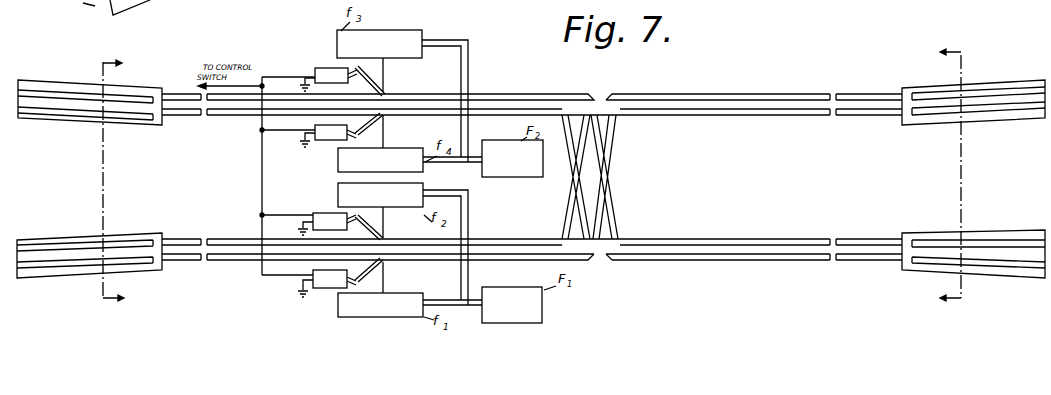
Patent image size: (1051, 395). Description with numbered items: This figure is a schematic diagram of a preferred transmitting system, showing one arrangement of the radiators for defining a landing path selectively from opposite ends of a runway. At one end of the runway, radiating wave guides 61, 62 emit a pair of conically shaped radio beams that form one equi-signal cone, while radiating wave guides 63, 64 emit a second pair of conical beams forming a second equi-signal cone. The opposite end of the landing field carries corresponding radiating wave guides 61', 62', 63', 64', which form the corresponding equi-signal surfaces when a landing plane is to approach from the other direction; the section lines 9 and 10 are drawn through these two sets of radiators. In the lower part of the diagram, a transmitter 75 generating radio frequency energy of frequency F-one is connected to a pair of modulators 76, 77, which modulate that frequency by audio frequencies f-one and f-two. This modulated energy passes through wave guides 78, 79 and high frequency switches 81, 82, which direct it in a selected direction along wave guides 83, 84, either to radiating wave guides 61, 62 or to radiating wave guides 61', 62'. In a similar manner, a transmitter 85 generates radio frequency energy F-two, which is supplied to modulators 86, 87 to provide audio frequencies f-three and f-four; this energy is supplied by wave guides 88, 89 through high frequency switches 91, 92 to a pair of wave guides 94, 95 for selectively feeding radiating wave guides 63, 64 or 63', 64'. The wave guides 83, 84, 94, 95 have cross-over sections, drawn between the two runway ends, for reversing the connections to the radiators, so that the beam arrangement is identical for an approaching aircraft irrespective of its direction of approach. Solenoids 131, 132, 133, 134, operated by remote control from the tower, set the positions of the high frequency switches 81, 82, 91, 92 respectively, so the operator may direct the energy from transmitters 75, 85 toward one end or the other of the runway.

The radiating wave guide 63' is at (85, 73).
The radiating wave guide 64' is at (85, 129).
The radiating wave guide 62' is at (85, 227).
The radiating wave guide 61' is at (85, 280).
The radiating wave guide 61 is at (978, 75).
The radiating wave guide 62 is at (978, 126).
The radiating wave guide 63 is at (978, 279).
The radiating wave guide 64 is at (978, 224).
The section line 10 is at (108, 181).
The section line 9 is at (953, 176).
The wave guide 94 is at (528, 93).
The wave guide 95 is at (498, 108).
The wave guide 84 is at (503, 238).
The wave guide 83 is at (503, 256).
The solenoid 133 is at (322, 68).
The solenoid 134 is at (330, 140).
The solenoid 132 is at (323, 213).
The solenoid 131 is at (328, 288).
The modulator 86 is at (400, 30).
The modulator 87 is at (425, 148).
The modulator 77 is at (424, 184).
The modulator 76 is at (423, 294).
The wave guide 88 is at (385, 70).
The high frequency switch 91 is at (387, 90).
The high frequency switch 92 is at (390, 118).
The wave guide 89 is at (385, 135).
The wave guide 79 is at (385, 212).
The high frequency switch 82 is at (386, 235).
The high frequency switch 81 is at (390, 263).
The wave guide 78 is at (386, 283).
The transmitter 85 is at (522, 178).
The transmitter 75 is at (543, 315).